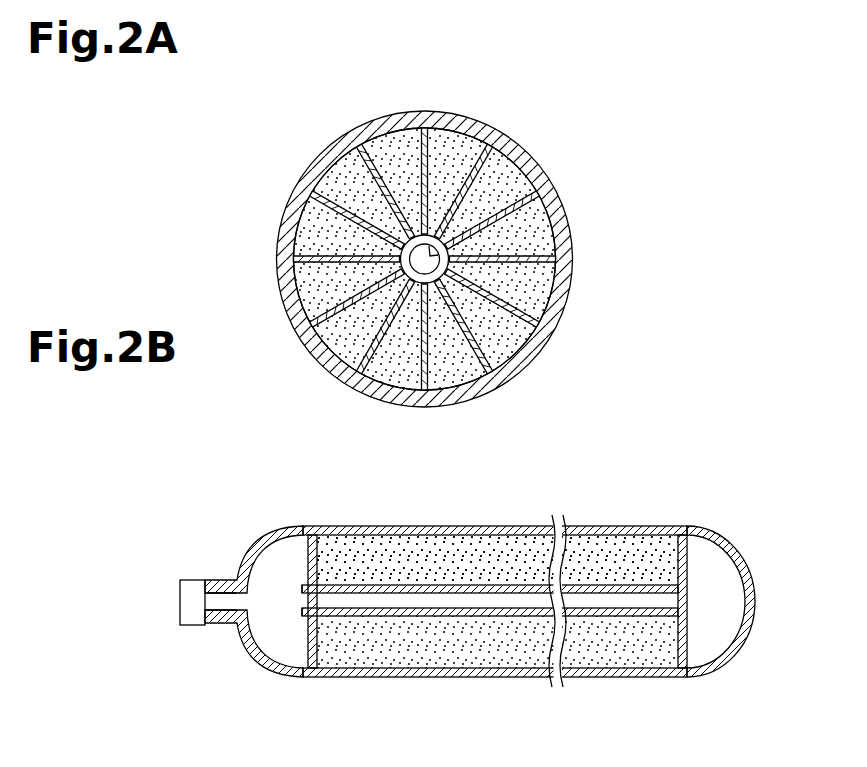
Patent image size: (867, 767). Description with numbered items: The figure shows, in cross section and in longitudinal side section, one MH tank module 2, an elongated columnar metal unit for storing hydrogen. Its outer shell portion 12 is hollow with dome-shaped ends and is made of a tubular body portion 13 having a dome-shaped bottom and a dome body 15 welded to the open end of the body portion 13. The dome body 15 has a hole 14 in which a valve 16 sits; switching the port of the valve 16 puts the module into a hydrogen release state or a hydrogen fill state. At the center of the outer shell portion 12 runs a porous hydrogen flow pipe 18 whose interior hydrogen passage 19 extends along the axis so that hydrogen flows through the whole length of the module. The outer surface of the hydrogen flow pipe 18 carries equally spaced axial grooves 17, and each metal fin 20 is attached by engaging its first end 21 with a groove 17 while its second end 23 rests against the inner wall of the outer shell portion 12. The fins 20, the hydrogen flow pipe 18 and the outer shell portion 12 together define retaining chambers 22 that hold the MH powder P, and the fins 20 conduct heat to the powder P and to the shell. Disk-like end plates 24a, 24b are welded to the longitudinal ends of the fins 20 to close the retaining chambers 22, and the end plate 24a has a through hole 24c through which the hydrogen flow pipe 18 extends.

In FIG. 2A, the MH tank module 2 is at (272, 357).
In FIG. 2A, the outer shell portion 12 is at (425, 236).
In FIG. 2B, the outer shell portion 12 is at (480, 585).
In FIG. 2A, the body portion 13 is at (378, 130).
In FIG. 2B, the body portion 13 is at (495, 602).
In FIG. 2B, the hole 14 is at (210, 608).
In FIG. 2B, the dome body 15 is at (258, 579).
In FIG. 2B, the valve 16 is at (190, 580).
In FIG. 2A, the axial grooves 17 is at (449, 253).
In FIG. 2A, the hydrogen flow pipe 18 is at (453, 390).
In FIG. 2B, the hydrogen flow pipe 18 is at (653, 573).
In FIG. 2A, the hydrogen passage 19 is at (452, 236).
In FIG. 2B, the hydrogen passage 19 is at (602, 600).
In FIG. 2A, the fin 20 is at (428, 160).
In FIG. 2B, the fin 20 is at (510, 527).
In FIG. 2A, the first end 21 is at (308, 268).
In FIG. 2A, the retaining chambers 22 is at (307, 235).
In FIG. 2B, the retaining chambers 22 is at (598, 655).
In FIG. 2A, the second end 23 is at (543, 203).
In FIG. 2B, the end plate 24a is at (307, 650).
In FIG. 2B, the end plate 24b is at (687, 640).
In FIG. 2B, the through hole 24c is at (305, 600).
In FIG. 2A, the MH powder P is at (352, 172).
In FIG. 2B, the MH powder P is at (453, 547).